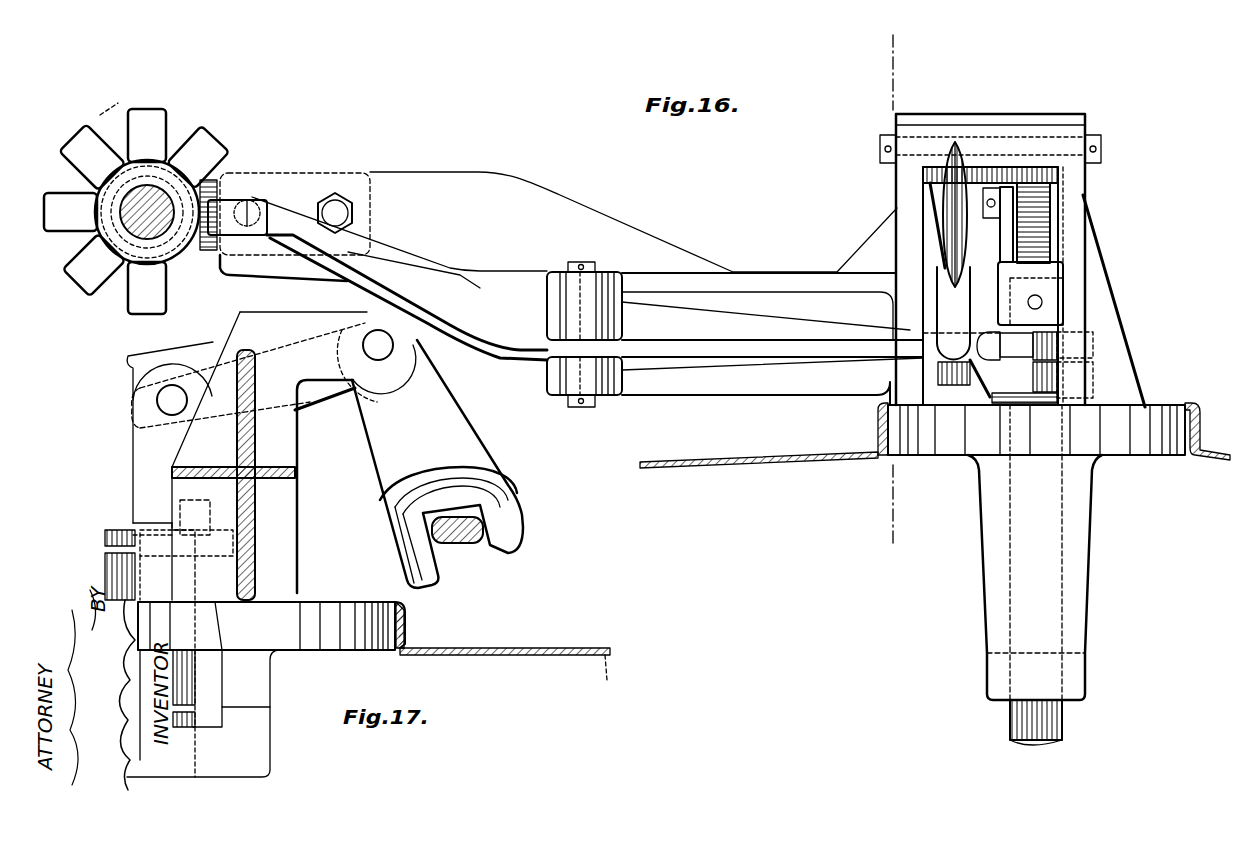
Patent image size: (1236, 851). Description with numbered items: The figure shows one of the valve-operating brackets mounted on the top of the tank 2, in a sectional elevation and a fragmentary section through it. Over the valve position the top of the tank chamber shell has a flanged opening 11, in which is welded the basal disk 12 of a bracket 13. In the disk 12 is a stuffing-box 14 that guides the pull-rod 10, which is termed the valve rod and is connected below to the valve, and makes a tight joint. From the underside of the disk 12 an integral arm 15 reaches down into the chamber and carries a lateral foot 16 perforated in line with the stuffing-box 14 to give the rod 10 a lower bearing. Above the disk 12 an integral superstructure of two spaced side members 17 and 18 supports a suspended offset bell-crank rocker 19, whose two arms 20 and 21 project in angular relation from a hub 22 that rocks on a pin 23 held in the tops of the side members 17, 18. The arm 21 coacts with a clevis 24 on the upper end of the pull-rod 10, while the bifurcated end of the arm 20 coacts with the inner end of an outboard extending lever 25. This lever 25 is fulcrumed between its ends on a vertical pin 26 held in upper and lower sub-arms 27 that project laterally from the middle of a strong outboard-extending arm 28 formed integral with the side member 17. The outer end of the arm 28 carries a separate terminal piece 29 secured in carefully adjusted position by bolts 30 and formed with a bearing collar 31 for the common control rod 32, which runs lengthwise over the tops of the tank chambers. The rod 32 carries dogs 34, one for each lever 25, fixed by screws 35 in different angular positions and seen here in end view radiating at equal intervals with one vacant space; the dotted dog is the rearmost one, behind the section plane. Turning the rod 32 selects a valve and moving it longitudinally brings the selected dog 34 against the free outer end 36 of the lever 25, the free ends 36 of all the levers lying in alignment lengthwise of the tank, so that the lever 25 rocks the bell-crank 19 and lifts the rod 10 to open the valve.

In FIG. 17, the tank 2 is at (565, 648).
In FIG. 17, the pull-rod 10 is at (200, 680).
In FIG. 16, the pull-rod 10 is at (1058, 724).
In FIG. 17, the flanged opening 11 is at (404, 626).
In FIG. 16, the flanged opening 11 is at (878, 432).
In FIG. 17, the basal disk 12 is at (370, 650).
In FIG. 16, the basal disk 12 is at (926, 455).
In FIG. 17, the bracket 13 is at (305, 496).
In FIG. 16, the bracket 13 is at (1125, 284).
In FIG. 16, the stuffing-box 14 is at (1060, 352).
In FIG. 17, the arm 15 is at (233, 700).
In FIG. 16, the arm 15 is at (1085, 562).
In FIG. 17, the lateral foot 16 is at (190, 752).
In FIG. 16, the lateral foot 16 is at (985, 650).
In FIG. 17, the side member 17 is at (300, 436).
In FIG. 16, the side member 17 is at (858, 198).
In FIG. 16, the side member 18 is at (1080, 250).
In FIG. 17, the bell-crank rocker 19 is at (455, 383).
In FIG. 16, the bell-crank rocker 19 is at (1040, 120).
In FIG. 17, the arm 20 is at (470, 438).
In FIG. 16, the arm 20 is at (940, 215).
In FIG. 17, the arm 21 is at (214, 345).
In FIG. 16, the arm 21 is at (1045, 202).
In FIG. 17, the hub 22 is at (372, 385).
In FIG. 16, the hub 22 is at (978, 114).
In FIG. 17, the pin 23 is at (393, 346).
In FIG. 16, the pin 23 is at (1102, 146).
In FIG. 17, the clevis 24 is at (140, 470).
In FIG. 16, the clevis 24 is at (1008, 250).
In FIG. 17, the outboard extending lever 25 is at (462, 545).
In FIG. 16, the outboard extending lever 25 is at (735, 345).
In FIG. 16, the vertical pin 26 is at (580, 262).
In FIG. 16, the sub-arms 27 is at (612, 275).
In FIG. 16, the outboard-extending arm 28 is at (518, 205).
In FIG. 17, the terminal piece 29 is at (240, 205).
In FIG. 17, the bolts 30 is at (330, 200).
In FIG. 17, the bearing collar 31 is at (106, 285).
In FIG. 17, the control rod 32 is at (160, 232).
In FIG. 17, the dogs 34 is at (192, 138).
In FIG. 17, the screws 35 is at (98, 186).
In FIG. 17, the free outer ends 36 is at (240, 270).